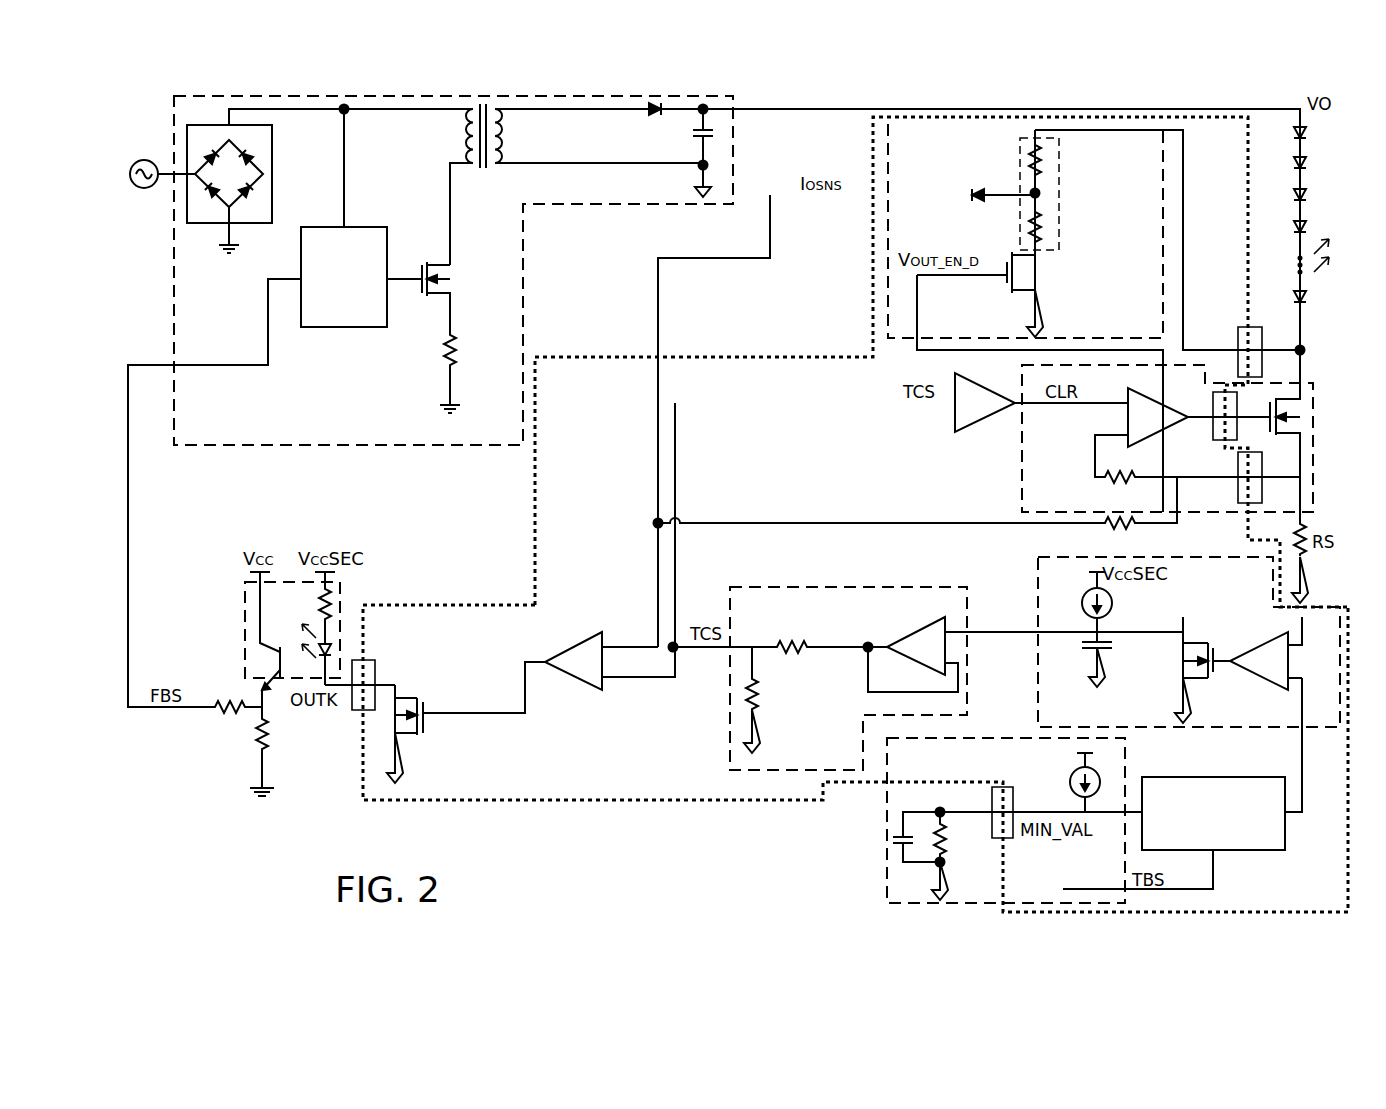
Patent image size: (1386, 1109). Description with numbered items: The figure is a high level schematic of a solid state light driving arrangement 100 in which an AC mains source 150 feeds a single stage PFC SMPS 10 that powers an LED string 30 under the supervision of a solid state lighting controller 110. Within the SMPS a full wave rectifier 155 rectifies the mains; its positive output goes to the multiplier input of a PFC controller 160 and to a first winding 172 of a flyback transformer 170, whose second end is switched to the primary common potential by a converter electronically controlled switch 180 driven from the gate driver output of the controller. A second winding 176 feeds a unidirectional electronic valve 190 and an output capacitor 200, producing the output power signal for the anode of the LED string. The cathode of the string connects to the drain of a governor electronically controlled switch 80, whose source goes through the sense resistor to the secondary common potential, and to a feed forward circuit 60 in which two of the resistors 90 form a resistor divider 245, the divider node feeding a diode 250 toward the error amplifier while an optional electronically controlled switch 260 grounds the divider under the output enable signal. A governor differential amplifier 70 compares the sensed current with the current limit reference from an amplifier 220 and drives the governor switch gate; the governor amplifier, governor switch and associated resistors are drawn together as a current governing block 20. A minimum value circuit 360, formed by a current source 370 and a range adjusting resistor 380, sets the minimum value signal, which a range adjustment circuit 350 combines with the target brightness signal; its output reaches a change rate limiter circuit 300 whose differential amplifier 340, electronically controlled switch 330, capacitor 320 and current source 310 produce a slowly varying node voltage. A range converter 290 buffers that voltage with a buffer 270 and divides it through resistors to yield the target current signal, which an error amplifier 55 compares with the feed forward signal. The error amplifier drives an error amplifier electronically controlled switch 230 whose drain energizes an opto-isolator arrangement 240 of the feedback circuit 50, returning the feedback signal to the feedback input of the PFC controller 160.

The single stage PFC SMPS 10 is at (410, 447).
The current limiting circuit 20 is at (1150, 438).
The LED string 30 is at (1308, 160).
The feedback circuit 50 is at (545, 802).
The error amplifier 55 is at (577, 634).
The feed forward circuit 60 is at (989, 231).
The governor differential amplifier 70 is at (1170, 433).
The governor electronically controlled switch 80 is at (1302, 407).
The resistors 90 is at (792, 696).
The solid state light driving arrangement 100 is at (201, 871).
The solid state lighting controller 110 is at (535, 564).
The AC mains source 150 is at (144, 188).
The full wave rectifier 155 is at (272, 133).
The PFC controller 160 is at (307, 226).
The flyback transformer 170 is at (473, 167).
The first winding 172 is at (462, 135).
The second winding 176 is at (500, 135).
The converter electronically controlled switch 180 is at (452, 270).
The unidirectional electronic valve 190 is at (655, 118).
The output capacitor 200 is at (715, 132).
The amplifier 220 is at (977, 433).
The error amplifier electronically controlled switch 230 is at (400, 742).
The opto-isolator arrangement 240 is at (245, 602).
The resistor divider 245 is at (1060, 186).
The diode 250 is at (976, 188).
The electronically controlled switch 260 is at (1038, 276).
The buffer 270 is at (899, 632).
The range converter 290 is at (730, 744).
The change rate limiter circuit 300 is at (1160, 642).
The current source 310 is at (1112, 604).
The capacitor 320 is at (1104, 644).
The electronically controlled switch 330 is at (1220, 688).
The differential amplifier 340 is at (1291, 656).
The range adjustment circuit 350 is at (1142, 824).
The minimum value circuit 360 is at (976, 820).
The current source 370 is at (1067, 778).
The range adjusting resistor 380 is at (944, 866).